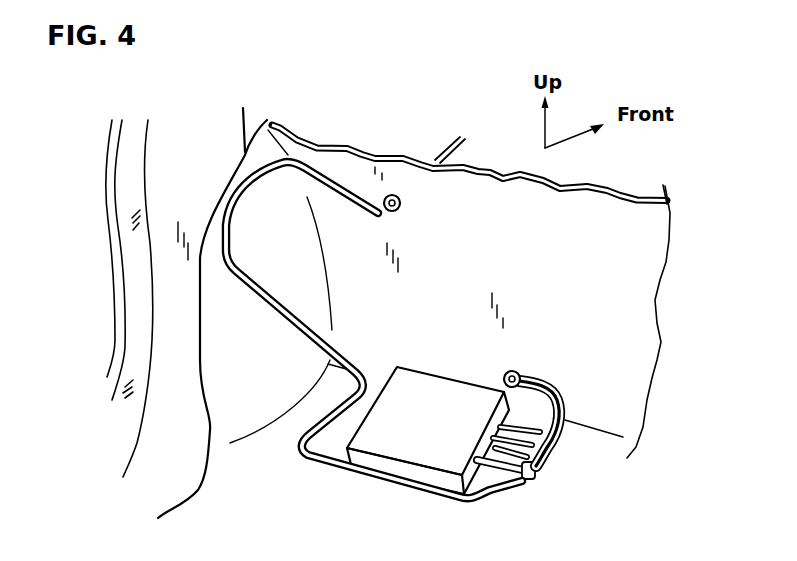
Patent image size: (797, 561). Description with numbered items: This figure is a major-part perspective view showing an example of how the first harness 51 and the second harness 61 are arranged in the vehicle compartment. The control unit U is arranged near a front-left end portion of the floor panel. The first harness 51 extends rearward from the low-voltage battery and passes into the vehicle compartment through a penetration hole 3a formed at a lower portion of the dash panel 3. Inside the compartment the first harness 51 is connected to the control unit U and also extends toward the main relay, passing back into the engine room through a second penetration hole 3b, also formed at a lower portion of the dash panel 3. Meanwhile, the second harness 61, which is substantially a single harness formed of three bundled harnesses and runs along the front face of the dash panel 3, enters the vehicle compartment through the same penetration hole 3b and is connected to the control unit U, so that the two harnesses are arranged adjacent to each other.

The dash panel 3 is at (603, 212).
The penetration hole 3a is at (403, 200).
The penetration hole 3b is at (513, 370).
The first harness 51 is at (297, 315).
The second harness 61 is at (552, 386).
The control unit U is at (408, 448).